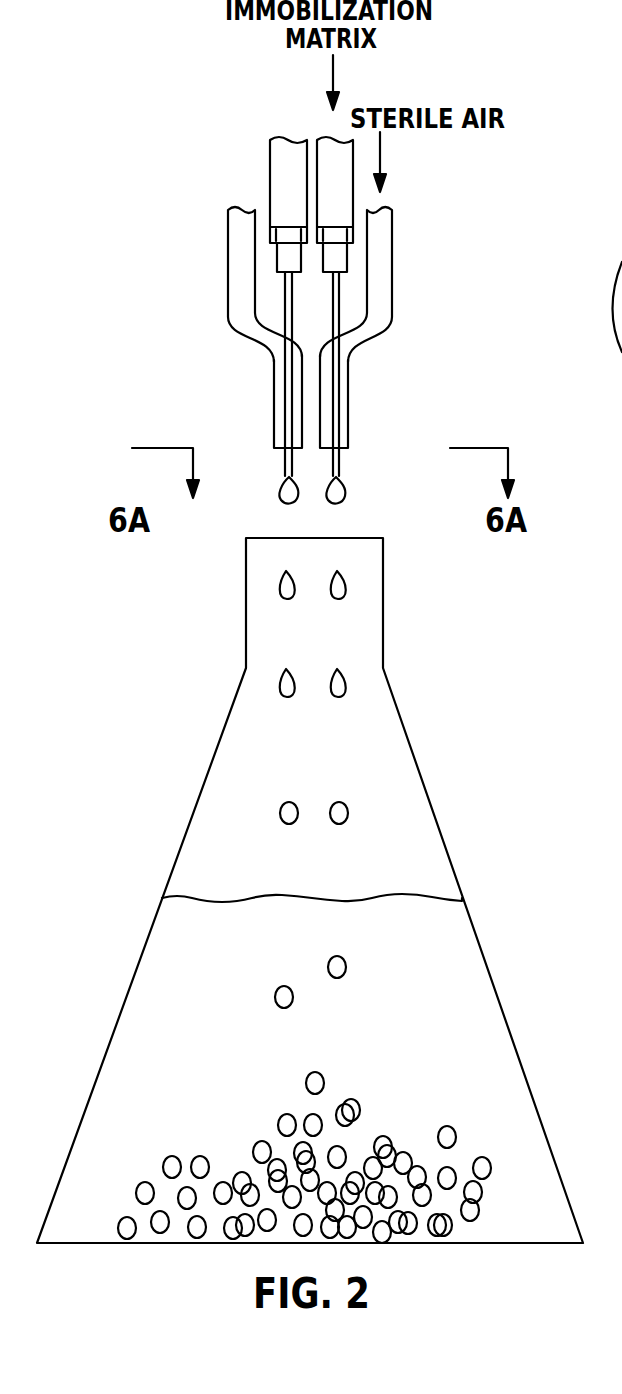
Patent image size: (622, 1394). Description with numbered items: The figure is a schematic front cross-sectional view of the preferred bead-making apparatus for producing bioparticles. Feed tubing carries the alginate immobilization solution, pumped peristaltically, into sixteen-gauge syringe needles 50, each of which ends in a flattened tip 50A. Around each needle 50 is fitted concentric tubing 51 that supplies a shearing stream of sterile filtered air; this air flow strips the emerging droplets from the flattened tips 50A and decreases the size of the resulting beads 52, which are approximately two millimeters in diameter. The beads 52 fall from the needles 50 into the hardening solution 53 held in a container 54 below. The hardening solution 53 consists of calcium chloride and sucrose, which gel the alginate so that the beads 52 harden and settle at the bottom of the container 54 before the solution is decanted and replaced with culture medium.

The syringe needle 50 is at (274, 388).
The flattened tip 50A is at (287, 477).
The concentric tubing 51 is at (228, 266).
The bead 52 is at (281, 497).
The hardening solution 53 is at (470, 1068).
The container 54 is at (498, 993).